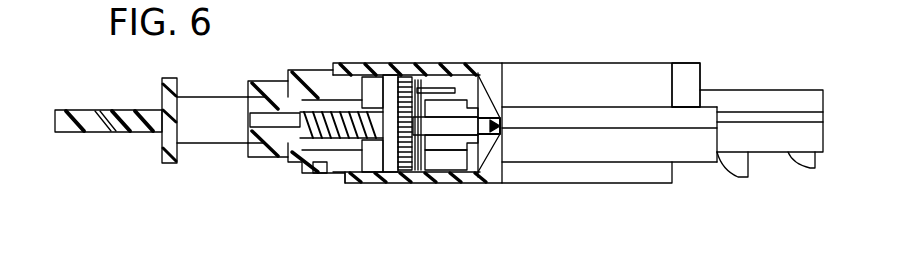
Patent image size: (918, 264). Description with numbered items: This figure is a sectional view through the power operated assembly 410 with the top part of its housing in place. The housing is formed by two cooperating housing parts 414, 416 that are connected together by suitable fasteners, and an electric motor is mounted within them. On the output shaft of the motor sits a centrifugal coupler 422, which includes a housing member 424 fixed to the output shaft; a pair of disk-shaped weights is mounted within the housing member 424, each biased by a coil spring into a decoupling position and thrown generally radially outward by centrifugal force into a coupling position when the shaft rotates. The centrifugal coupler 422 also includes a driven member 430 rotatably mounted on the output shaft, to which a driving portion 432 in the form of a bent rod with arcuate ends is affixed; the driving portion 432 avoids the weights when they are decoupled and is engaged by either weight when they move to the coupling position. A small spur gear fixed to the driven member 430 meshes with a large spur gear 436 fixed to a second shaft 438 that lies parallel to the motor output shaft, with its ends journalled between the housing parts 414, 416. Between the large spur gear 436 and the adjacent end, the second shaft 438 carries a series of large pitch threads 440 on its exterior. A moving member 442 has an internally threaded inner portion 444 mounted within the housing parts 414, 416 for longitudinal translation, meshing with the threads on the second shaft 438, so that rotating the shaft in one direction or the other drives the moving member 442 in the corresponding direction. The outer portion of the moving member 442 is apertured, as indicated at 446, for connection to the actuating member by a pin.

The power operated assembly 410 is at (578, 63).
The housing part 414 is at (572, 172).
The housing part 416 is at (648, 73).
The centrifugal coupler 422 is at (450, 82).
The housing member 424 is at (450, 150).
The driven member 430 is at (420, 172).
The driving portion 432 is at (428, 87).
The large spur gear 436 is at (386, 73).
The second shaft 438 is at (497, 138).
The large pitch threads 440 is at (330, 172).
The moving member 442 is at (147, 128).
The inner portion 444 is at (303, 108).
The aperture 446 is at (95, 110).